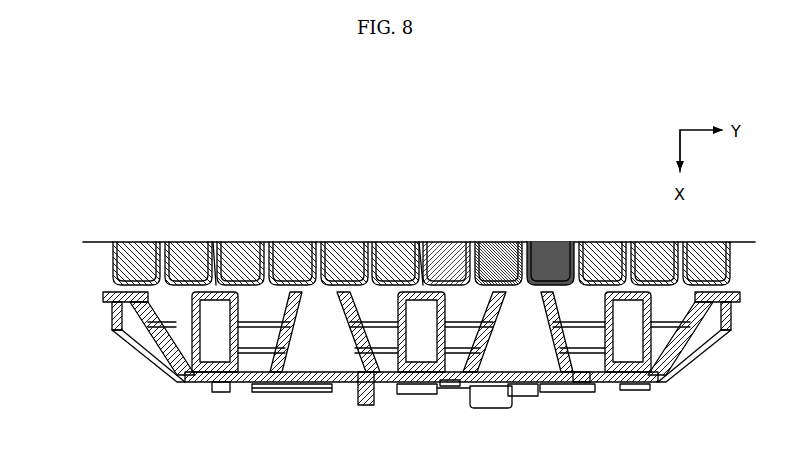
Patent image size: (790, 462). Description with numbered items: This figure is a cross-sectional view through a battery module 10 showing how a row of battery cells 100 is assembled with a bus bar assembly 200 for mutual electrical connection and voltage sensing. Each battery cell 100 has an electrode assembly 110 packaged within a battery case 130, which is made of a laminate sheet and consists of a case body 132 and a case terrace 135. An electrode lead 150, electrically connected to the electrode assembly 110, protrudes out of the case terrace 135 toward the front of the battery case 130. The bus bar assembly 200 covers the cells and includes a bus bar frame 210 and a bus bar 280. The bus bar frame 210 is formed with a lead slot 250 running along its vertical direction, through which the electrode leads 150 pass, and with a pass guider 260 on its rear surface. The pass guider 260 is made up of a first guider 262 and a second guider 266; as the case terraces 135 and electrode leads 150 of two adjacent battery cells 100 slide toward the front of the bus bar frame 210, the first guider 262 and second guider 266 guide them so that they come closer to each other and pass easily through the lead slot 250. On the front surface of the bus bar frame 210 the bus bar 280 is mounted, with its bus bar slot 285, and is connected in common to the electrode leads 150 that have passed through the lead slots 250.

The battery module 10 is at (240, 138).
The battery cell 100 is at (396, 235).
The electrode assembly 110 is at (140, 243).
The battery case 130 is at (181, 227).
The case body 132 is at (170, 243).
The case terrace 135 is at (160, 310).
The electrode lead 150 is at (395, 400).
The bus bar assembly 200 is at (110, 355).
The bus bar frame 210 is at (300, 382).
The lead slot 250 is at (452, 384).
The pass guider 260 is at (362, 292).
The first guider 262 is at (455, 243).
The second guider 266 is at (503, 243).
The bus bar 280 is at (233, 386).
The bus bar slot 285 is at (458, 386).